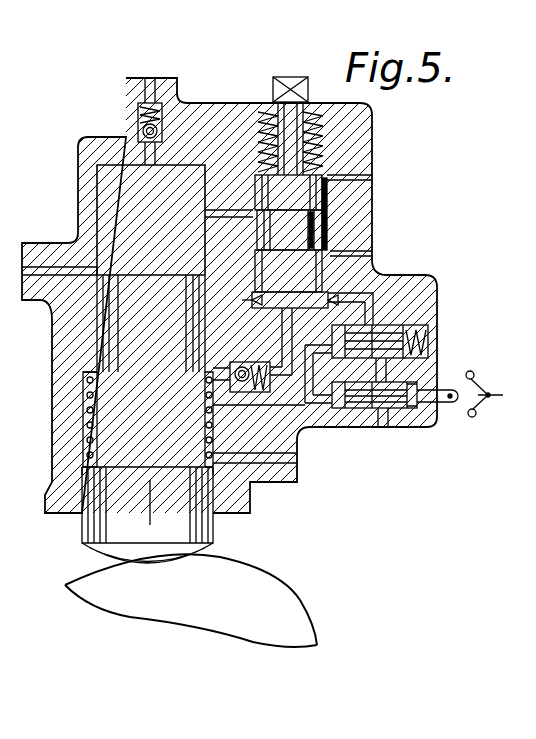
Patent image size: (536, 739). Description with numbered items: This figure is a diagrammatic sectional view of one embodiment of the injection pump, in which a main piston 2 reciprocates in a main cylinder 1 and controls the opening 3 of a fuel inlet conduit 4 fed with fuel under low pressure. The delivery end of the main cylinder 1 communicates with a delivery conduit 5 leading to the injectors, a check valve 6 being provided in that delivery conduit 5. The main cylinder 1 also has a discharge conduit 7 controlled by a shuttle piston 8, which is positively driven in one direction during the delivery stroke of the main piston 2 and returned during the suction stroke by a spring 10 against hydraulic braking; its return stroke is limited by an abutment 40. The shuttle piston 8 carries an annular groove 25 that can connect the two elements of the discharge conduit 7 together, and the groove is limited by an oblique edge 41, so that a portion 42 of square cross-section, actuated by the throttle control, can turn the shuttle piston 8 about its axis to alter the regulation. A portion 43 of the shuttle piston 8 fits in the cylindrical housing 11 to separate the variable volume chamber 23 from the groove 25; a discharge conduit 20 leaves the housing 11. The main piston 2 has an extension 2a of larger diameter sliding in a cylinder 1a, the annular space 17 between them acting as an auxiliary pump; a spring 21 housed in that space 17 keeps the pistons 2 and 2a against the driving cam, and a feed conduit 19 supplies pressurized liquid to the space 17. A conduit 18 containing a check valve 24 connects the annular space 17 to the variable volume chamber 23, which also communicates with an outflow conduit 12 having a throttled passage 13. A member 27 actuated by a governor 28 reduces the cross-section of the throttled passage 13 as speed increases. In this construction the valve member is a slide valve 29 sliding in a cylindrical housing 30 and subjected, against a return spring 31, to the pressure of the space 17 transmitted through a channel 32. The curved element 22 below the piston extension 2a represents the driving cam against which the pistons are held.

The main cylinder 1 is at (152, 221).
The cylinder 1a is at (88, 450).
The main piston 2 is at (140, 353).
The extension of larger diameter 2a is at (146, 509).
The opening 3 is at (98, 269).
The fuel inlet conduit 4 is at (36, 270).
The delivery conduit 5 is at (149, 84).
The check valve 6 is at (141, 128).
The discharge conduit 7 is at (216, 213).
The shuttle piston 8 is at (288, 197).
The spring 10 is at (321, 140).
The cylindrical housing 11 is at (364, 286).
The outflow conduit 12 is at (389, 292).
The throttled passage 13 is at (409, 381).
The annular space 17 is at (88, 425).
The conduit 18 is at (284, 378).
The feed conduit 19 is at (296, 460).
The discharge conduit 20 is at (356, 254).
The spring 21 is at (88, 393).
The workpiece 22 is at (267, 592).
The variable volume chamber 23 is at (298, 308).
The check valve 24 is at (240, 375).
The annular groove 25 is at (317, 222).
The member 27 is at (403, 398).
The governor 28 is at (480, 401).
The slide valve 29 is at (413, 328).
The cylindrical housing 30 is at (340, 344).
The return spring 31 is at (430, 340).
The channel 32 is at (313, 402).
The abutment 40 is at (252, 294).
The oblique edge 41 is at (316, 207).
The portion of square cross-section 42 is at (291, 78).
The portion of shuttle piston 43 is at (290, 280).